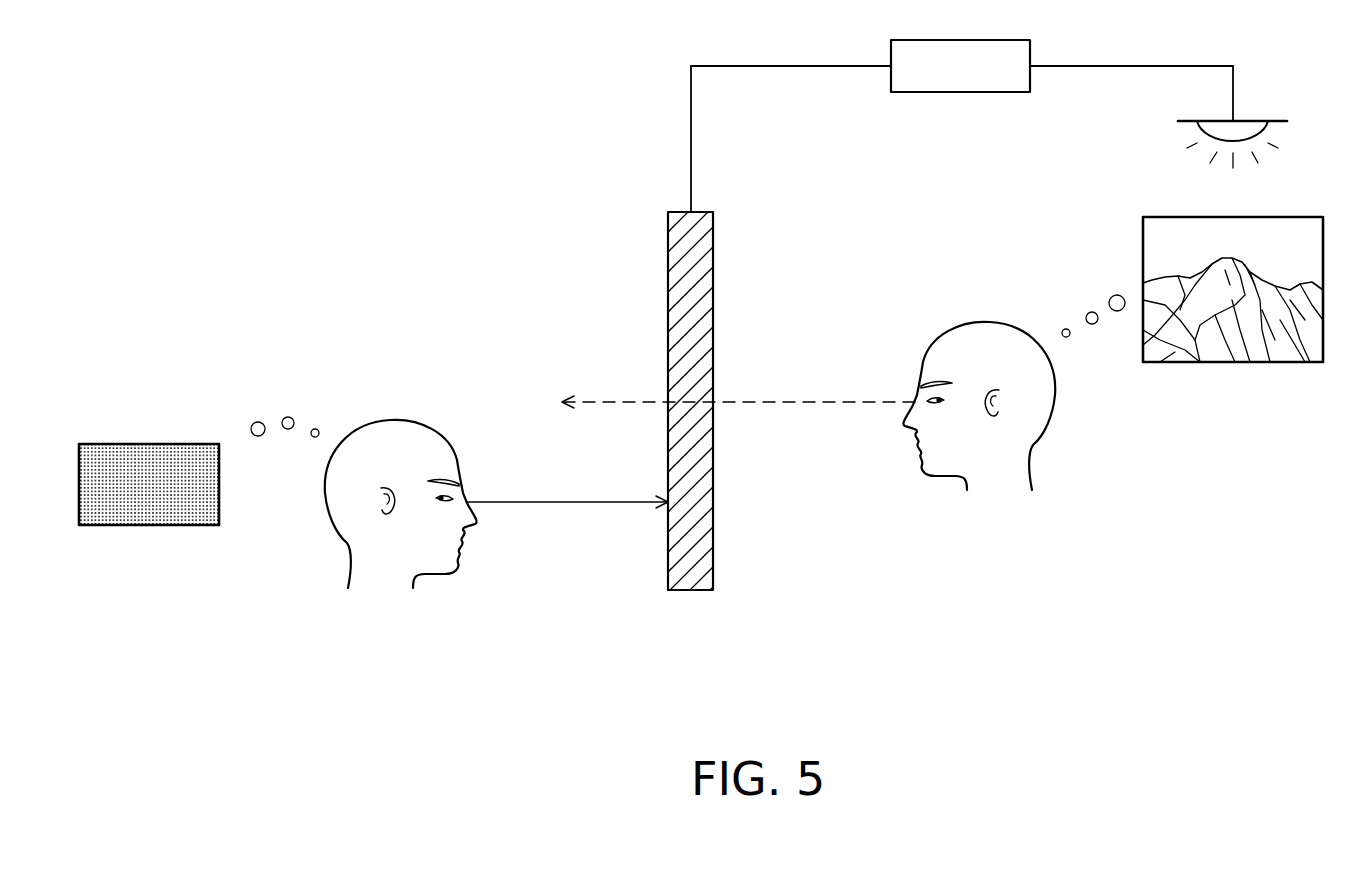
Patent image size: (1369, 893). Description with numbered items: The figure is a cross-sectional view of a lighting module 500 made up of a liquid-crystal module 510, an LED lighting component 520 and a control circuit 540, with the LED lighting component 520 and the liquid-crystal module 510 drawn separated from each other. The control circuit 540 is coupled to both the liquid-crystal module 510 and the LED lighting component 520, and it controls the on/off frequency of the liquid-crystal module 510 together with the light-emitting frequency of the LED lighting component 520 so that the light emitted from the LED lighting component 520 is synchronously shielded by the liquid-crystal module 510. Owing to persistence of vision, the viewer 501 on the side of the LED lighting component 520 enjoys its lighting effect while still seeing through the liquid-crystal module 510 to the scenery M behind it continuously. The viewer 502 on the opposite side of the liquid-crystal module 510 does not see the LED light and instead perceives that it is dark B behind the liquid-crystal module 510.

The lighting module 500 is at (175, 91).
The control circuit 540 is at (986, 84).
The LED lighting component 520 is at (1268, 126).
The liquid-crystal module 510 is at (693, 578).
The viewer 501 is at (987, 320).
The viewer 502 is at (395, 420).
The dark B is at (147, 444).
The scenery M is at (1233, 362).